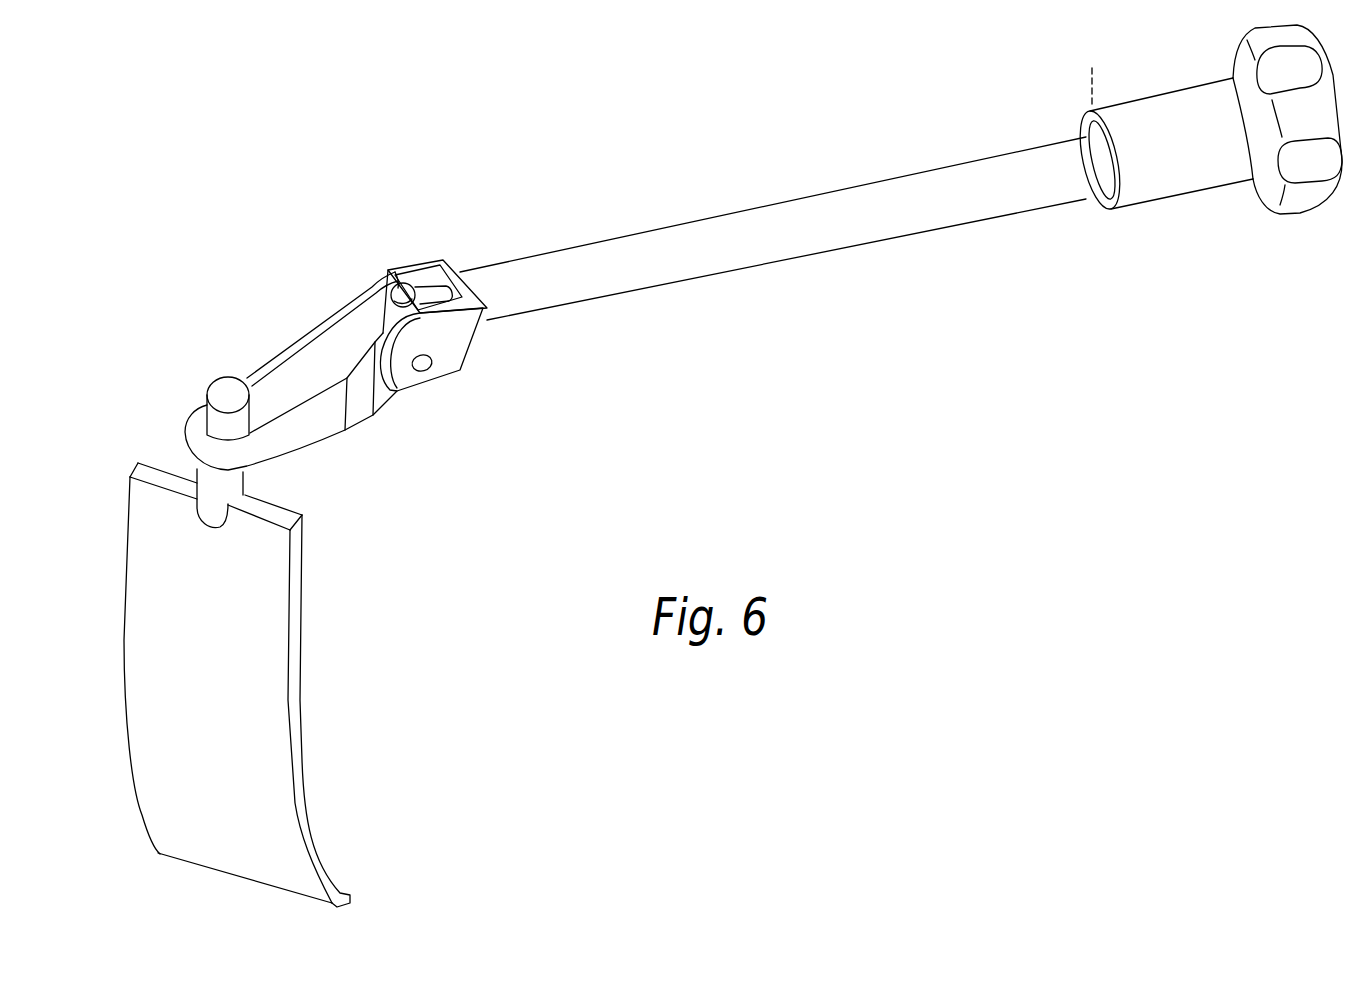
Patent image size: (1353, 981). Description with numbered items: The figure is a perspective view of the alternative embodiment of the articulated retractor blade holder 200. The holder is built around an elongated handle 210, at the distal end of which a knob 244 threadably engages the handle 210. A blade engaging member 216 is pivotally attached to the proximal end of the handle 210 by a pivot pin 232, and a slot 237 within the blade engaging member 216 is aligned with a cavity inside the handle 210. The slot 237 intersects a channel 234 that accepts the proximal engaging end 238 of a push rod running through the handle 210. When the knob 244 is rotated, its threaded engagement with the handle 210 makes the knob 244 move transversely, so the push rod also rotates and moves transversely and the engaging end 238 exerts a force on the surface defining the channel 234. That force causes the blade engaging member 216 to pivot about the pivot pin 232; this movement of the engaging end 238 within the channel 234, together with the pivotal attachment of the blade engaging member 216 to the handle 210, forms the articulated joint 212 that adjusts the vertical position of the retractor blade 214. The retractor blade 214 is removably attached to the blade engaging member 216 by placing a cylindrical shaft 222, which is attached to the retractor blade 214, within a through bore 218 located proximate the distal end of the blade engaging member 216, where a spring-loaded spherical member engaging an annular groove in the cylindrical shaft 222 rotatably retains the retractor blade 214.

The articulated retractor blade holder 200 is at (903, 171).
The handle 210 is at (722, 255).
The articulated joint 212 is at (442, 255).
The retractor blade 214 is at (272, 652).
The blade engaging member 216 is at (293, 390).
The through bore 218 is at (202, 440).
The cylindrical shaft 222 is at (223, 388).
The pivot pin 232 is at (422, 371).
The channel 234 is at (400, 285).
The slot 237 is at (437, 293).
The proximal engaging end 238 is at (390, 282).
The knob 244 is at (1137, 122).